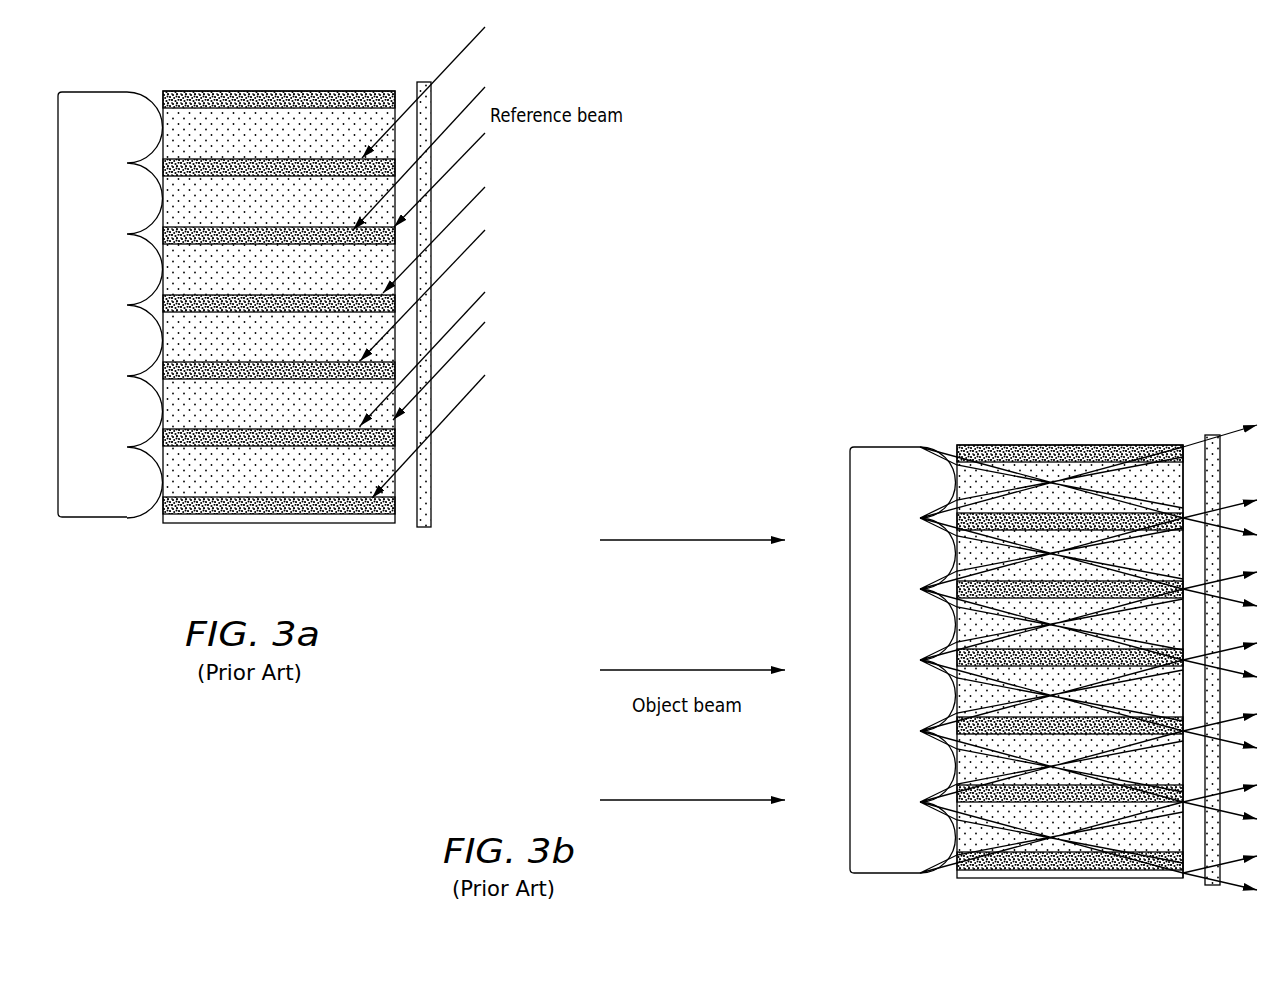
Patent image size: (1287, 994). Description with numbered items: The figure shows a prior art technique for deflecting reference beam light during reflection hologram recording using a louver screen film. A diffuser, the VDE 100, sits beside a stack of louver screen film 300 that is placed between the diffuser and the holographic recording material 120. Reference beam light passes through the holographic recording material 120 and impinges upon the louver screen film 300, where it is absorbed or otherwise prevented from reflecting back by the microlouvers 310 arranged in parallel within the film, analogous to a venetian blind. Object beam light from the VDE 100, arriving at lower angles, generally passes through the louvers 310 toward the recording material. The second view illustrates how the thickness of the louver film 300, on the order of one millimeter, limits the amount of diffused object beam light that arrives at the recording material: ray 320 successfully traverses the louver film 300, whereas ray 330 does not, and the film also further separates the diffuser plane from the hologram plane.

In FIG. 3A, the diffuser (VDE) 100 is at (117, 500).
In FIG. 3B, the diffuser (VDE) 100 is at (910, 636).
In FIG. 3A, the holographic recording material 120 is at (431, 503).
In FIG. 3B, the holographic recording material 120 is at (1220, 845).
In FIG. 3A, the louver screen film 300 is at (279, 335).
In FIG. 3B, the louver screen film 300 is at (1070, 880).
In FIG. 3A, the louvers 310 is at (200, 447).
In FIG. 3B, the ray 320 is at (928, 446).
In FIG. 3B, the ray 330 is at (1189, 441).